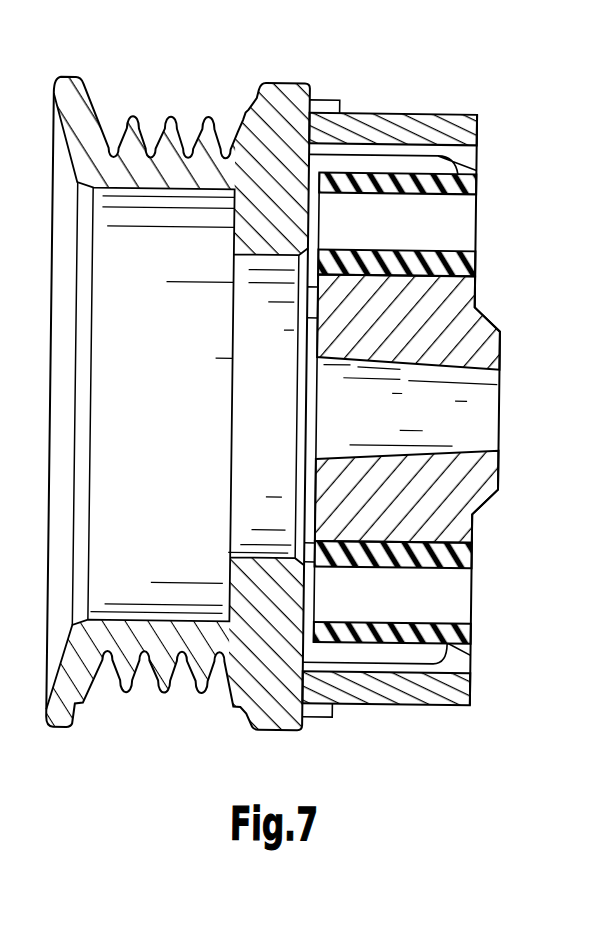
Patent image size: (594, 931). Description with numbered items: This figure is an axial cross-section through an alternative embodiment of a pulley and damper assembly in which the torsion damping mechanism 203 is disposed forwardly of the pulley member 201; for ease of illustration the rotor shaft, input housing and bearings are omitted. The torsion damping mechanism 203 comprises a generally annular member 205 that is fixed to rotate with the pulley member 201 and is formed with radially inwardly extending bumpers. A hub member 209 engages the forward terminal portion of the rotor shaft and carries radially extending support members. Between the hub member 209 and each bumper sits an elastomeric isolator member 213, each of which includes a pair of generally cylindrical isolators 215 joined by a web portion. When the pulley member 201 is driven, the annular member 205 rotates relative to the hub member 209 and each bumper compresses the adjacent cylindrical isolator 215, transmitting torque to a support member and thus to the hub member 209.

The pulley member 201 is at (85, 106).
The torsion damping mechanism 203 is at (400, 82).
The annular member 205 is at (465, 131).
The hub member 209 is at (497, 511).
The isolator member 213 is at (504, 222).
The cylindrical isolator 215 is at (498, 644).